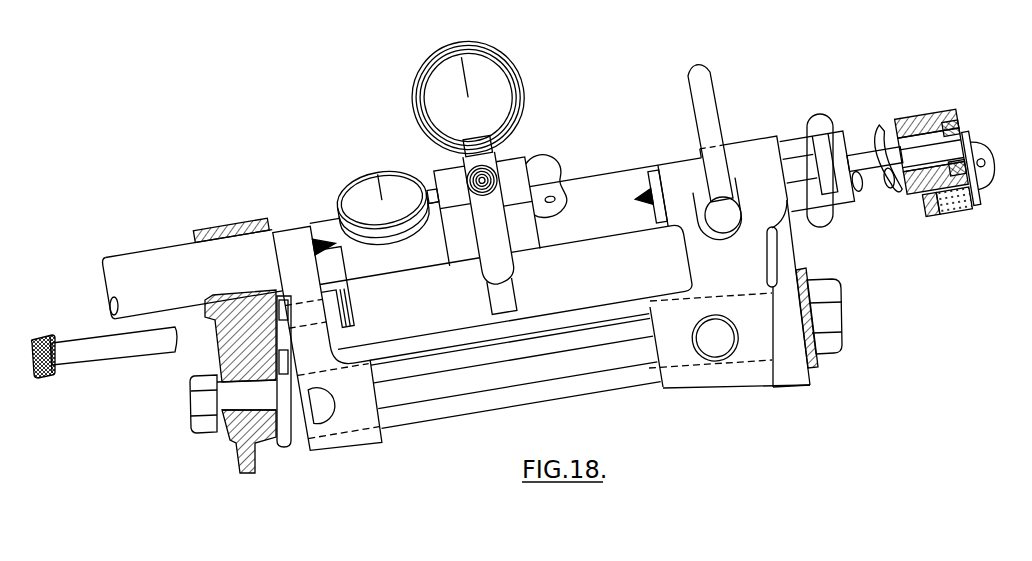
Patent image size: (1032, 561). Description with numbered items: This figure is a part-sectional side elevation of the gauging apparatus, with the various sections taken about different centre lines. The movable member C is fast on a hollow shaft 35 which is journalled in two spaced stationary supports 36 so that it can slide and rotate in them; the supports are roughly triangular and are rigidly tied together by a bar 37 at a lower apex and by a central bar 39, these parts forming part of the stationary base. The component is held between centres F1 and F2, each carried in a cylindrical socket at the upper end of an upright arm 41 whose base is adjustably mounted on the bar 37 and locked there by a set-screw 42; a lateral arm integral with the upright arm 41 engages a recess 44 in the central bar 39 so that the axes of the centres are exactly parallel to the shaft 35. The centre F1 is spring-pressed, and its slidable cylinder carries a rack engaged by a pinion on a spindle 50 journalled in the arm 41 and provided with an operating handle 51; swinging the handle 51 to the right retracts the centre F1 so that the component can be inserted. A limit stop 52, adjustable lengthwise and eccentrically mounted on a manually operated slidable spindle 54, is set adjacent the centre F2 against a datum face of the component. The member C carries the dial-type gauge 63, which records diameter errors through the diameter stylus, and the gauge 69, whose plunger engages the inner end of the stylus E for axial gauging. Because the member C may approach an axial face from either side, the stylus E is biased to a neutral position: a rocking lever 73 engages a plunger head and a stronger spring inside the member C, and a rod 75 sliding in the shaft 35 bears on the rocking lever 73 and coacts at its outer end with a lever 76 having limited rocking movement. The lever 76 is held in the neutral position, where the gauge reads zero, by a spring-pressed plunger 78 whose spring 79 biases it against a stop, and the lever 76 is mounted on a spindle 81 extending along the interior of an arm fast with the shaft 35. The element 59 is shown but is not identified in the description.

The hollow shaft 35 is at (593, 190).
The stationary supports 36 is at (232, 345).
The bar 37 is at (480, 402).
The central bar 39 is at (577, 320).
The upright arms 41 is at (697, 253).
The set-screws 42 is at (317, 413).
The recess 44 is at (277, 377).
The spindle 50 is at (723, 226).
The operating handle 51 is at (705, 112).
The limit stop 52 is at (346, 289).
The slidable spindle 54 is at (170, 350).
The clamp screw 59 is at (818, 122).
The dial-type gauge 63 is at (505, 83).
The gauge 69 is at (393, 185).
The rocking lever 73 is at (542, 183).
The rod 75 is at (933, 150).
The lever 76 is at (977, 158).
The spring-pressed plunger 78 is at (968, 205).
The spring 79 is at (938, 210).
The spindle 81 is at (983, 170).
The movable member C is at (523, 220).
The stylus E is at (500, 162).
The centre F1 is at (645, 190).
The centre F2 is at (322, 240).